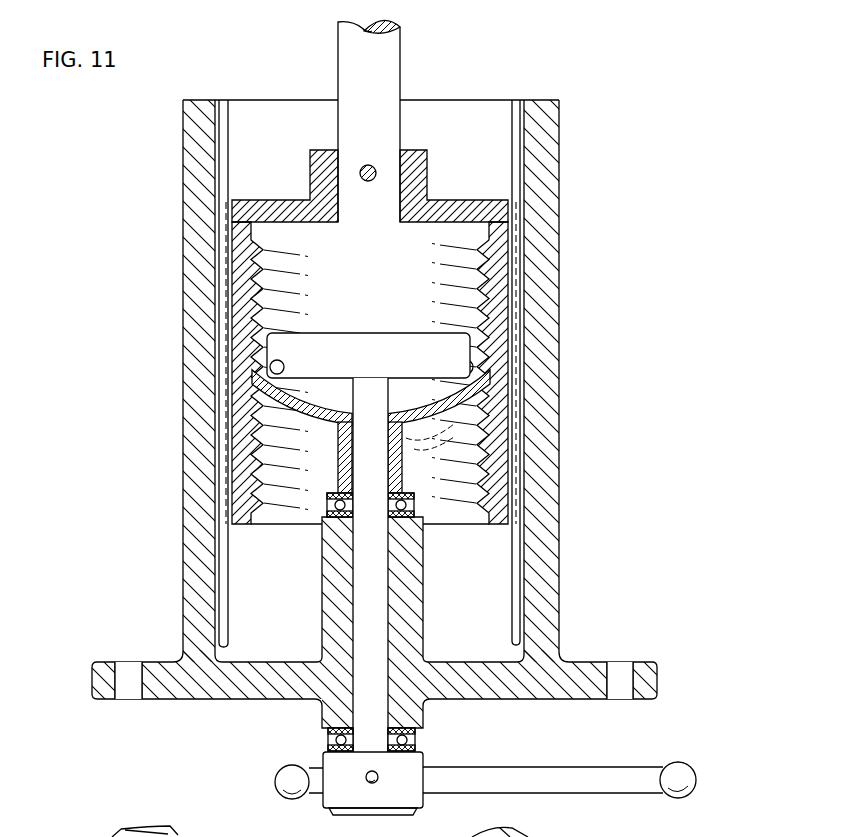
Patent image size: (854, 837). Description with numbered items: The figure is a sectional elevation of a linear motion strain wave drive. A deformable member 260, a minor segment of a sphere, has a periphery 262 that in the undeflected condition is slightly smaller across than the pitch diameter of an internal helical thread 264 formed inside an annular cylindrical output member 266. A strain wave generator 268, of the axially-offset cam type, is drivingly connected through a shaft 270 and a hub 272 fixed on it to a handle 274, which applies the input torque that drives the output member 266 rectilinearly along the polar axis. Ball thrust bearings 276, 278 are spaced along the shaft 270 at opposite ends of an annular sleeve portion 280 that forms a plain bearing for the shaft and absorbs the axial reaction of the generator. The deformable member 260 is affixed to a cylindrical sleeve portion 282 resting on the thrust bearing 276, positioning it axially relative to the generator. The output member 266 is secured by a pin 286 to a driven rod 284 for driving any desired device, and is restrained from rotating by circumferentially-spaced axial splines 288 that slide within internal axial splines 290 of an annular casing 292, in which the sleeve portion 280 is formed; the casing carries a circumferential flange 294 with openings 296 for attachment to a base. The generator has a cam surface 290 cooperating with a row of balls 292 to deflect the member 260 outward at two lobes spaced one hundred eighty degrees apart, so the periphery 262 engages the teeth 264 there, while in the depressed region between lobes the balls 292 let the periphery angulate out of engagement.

The deformable member 260 is at (284, 416).
The periphery 262 is at (270, 365).
The internal helical thread 264 is at (280, 290).
The annular cylindrical output member 266 is at (453, 198).
The strain wave generator 268 is at (340, 334).
The shaft 270 is at (390, 609).
The hub 272 is at (322, 803).
The handle 274 is at (545, 773).
The ball thrust bearing 276 is at (412, 503).
The ball thrust bearing 278 is at (417, 733).
The annular sleeve portion 280 is at (322, 578).
The cylindrical sleeve portion 282 is at (402, 466).
The driven rod 284 is at (393, 60).
The pin 286 is at (381, 142).
The axial splines 288 is at (519, 231).
The internal axial splines 290 is at (512, 553).
The annular casing 292 is at (560, 493).
The circumferential flange 294 is at (593, 662).
The openings 296 is at (138, 668).